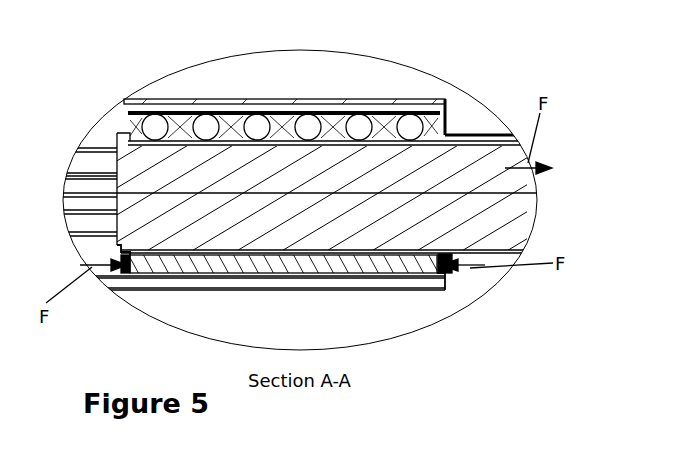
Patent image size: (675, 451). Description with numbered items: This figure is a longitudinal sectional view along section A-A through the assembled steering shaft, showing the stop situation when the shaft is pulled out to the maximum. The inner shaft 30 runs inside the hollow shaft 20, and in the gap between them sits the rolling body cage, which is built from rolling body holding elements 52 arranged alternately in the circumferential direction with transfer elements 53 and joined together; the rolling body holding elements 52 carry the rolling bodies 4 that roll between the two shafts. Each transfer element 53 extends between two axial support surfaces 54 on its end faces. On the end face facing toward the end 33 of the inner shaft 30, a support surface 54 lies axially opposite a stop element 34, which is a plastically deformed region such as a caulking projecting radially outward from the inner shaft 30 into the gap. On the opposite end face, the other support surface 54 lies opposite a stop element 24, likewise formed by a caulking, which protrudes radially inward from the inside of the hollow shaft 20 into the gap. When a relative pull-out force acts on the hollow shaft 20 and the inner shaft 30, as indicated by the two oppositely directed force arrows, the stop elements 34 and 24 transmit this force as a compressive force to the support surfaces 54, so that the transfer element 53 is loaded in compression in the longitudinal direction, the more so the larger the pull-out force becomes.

The balls 4 is at (258, 126).
The rolling body holding element 52 is at (283, 130).
The inner shaft 30 is at (468, 155).
The end 33 is at (115, 192).
The stop element 34 is at (123, 256).
The support surface 54 is at (113, 272).
The transfer element 53 is at (183, 262).
The hollow shaft 20 is at (255, 283).
The stop element 24 is at (450, 276).